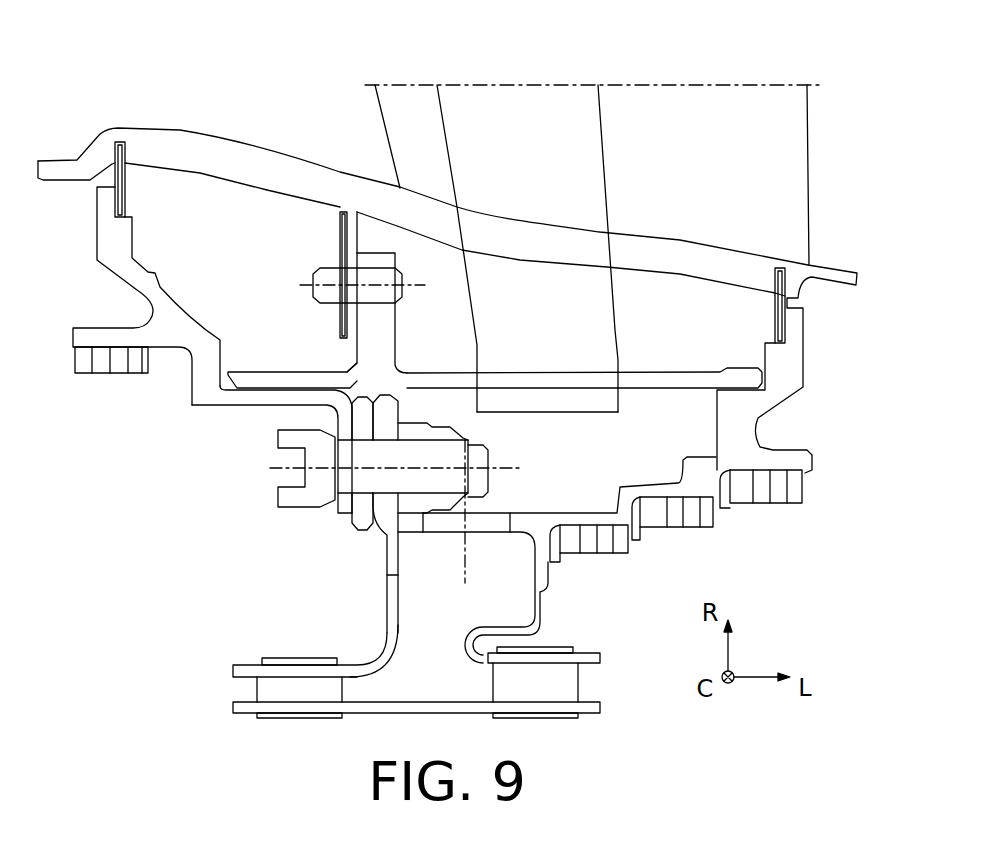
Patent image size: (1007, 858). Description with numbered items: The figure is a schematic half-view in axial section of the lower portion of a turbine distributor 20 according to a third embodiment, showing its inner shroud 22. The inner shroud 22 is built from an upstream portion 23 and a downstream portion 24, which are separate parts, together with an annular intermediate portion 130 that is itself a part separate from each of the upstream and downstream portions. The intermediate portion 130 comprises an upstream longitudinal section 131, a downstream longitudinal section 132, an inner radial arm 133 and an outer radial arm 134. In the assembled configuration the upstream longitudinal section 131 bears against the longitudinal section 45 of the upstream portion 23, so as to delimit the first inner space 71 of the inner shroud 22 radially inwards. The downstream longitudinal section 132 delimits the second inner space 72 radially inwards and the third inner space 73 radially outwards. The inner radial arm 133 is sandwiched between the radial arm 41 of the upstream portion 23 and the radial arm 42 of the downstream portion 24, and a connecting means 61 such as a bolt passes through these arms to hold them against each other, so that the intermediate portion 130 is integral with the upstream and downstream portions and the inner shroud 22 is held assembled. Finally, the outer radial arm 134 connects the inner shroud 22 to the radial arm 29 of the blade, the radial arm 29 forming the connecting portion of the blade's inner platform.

The distributor 20 is at (168, 80).
The inner shroud 22 is at (222, 600).
The upstream portion 23 is at (199, 427).
The downstream portion 24 is at (372, 553).
The radial arm 29 is at (340, 240).
The radial arm 41 is at (335, 515).
The radial arm 42 is at (390, 408).
The longitudinal section 45 is at (212, 409).
The connecting means 61 is at (488, 462).
The first inner space 71 is at (169, 296).
The second inner space 72 is at (751, 419).
The third inner space 73 is at (569, 470).
The intermediate portion 130 is at (342, 359).
The upstream longitudinal section 131 is at (255, 377).
The downstream longitudinal section 132 is at (670, 378).
The inner radial arm 133 is at (363, 518).
The outer radial arm 134 is at (387, 330).